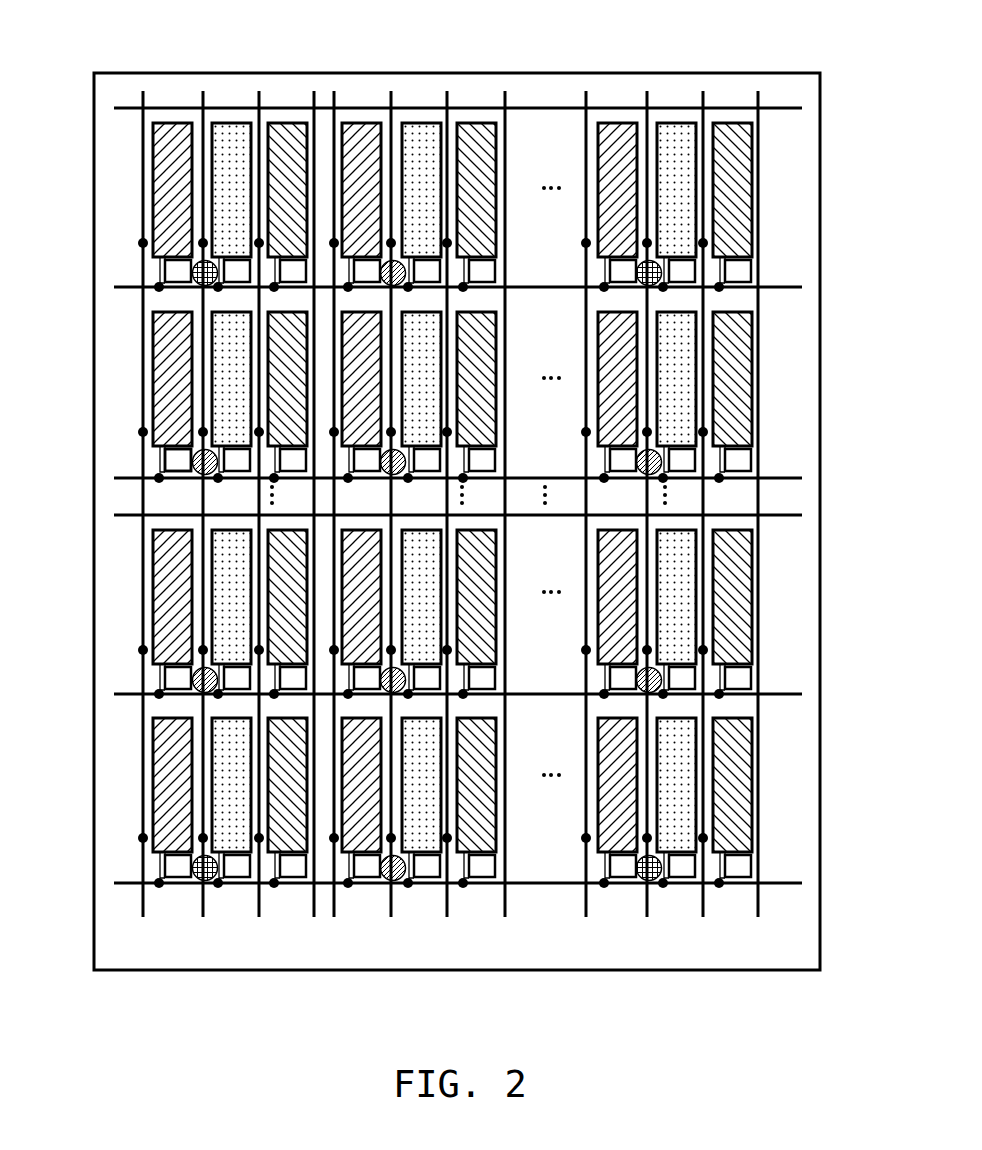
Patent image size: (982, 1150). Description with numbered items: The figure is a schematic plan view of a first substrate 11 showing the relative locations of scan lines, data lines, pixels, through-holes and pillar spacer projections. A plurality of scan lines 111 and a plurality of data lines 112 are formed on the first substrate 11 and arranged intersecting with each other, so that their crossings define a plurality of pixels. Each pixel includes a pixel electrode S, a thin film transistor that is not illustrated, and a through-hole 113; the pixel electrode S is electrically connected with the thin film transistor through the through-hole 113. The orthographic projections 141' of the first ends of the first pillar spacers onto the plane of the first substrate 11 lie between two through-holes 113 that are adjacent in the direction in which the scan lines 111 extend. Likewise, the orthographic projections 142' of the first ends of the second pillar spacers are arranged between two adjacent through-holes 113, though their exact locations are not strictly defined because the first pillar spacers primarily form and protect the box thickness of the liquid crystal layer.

The first substrate 11 is at (822, 80).
The scan lines 111 is at (125, 288).
The data lines 112 is at (760, 897).
The through-hole 113 is at (173, 463).
The orthographic projections of the first ends of the first pillar spacers 141' is at (536, 569).
The orthographic projections of the first ends of the second pillar spacers 142' is at (350, 571).
The pixel electrode S is at (173, 125).